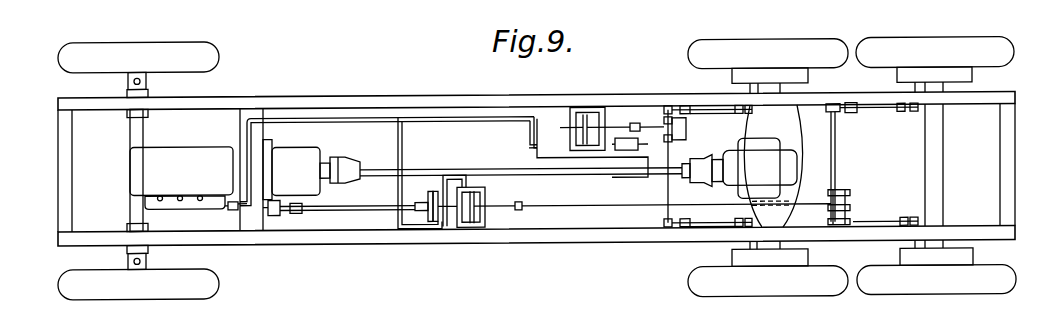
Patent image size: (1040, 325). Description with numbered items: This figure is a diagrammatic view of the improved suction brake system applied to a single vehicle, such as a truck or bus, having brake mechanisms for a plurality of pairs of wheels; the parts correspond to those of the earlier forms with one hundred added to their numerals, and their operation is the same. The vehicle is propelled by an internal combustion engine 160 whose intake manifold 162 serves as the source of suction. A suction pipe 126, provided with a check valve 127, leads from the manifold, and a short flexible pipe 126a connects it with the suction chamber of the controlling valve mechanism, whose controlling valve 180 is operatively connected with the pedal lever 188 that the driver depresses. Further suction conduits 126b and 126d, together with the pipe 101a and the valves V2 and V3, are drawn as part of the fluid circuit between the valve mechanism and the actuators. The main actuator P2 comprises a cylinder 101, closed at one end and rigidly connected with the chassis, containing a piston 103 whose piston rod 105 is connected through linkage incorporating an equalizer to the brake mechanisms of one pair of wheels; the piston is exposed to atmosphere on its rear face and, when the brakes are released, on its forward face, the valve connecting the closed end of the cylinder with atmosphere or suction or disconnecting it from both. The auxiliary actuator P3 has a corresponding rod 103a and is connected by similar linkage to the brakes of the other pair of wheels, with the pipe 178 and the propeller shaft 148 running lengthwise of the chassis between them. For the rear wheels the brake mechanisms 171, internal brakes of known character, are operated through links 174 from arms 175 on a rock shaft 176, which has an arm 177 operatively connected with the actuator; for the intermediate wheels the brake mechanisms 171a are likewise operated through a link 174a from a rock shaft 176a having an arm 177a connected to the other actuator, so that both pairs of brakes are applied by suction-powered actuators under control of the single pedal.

The internal combustion engine 160 is at (181, 171).
The intake manifold 162 is at (186, 210).
The check valve 127 is at (233, 211).
The pedal lever 188 is at (279, 214).
The controlling valve 180 is at (352, 213).
The suction pipe 126 is at (320, 162).
The short flexible pipe 126a is at (403, 152).
The conduit 126b is at (468, 133).
The conduit 126d is at (530, 151).
The cylinder 101 is at (464, 178).
The conduit 101a is at (556, 152).
The valve V2 is at (435, 199).
The piston 103 is at (484, 210).
The piston rod 105 is at (511, 211).
The propeller shaft 148 is at (585, 180).
The conduit 178 is at (628, 210).
The main actuator P2 is at (472, 229).
The auxiliary actuator P3 is at (587, 112).
The piston rod 103a is at (608, 127).
The valve V3 is at (626, 155).
The link 174a is at (712, 119).
The arm 177a is at (686, 143).
The rock shaft 176a is at (670, 192).
The brake mechanism for intermediate wheels 171a is at (732, 80).
The arm 175 is at (833, 109).
The brake mechanism for rear wheels 171 is at (897, 80).
The link 174 is at (873, 114).
The rock shaft 176 is at (837, 168).
The arm 177 is at (851, 205).